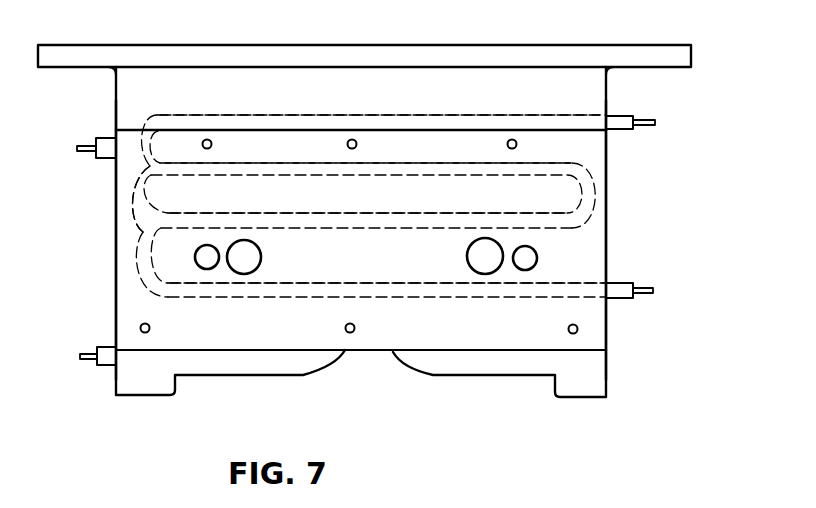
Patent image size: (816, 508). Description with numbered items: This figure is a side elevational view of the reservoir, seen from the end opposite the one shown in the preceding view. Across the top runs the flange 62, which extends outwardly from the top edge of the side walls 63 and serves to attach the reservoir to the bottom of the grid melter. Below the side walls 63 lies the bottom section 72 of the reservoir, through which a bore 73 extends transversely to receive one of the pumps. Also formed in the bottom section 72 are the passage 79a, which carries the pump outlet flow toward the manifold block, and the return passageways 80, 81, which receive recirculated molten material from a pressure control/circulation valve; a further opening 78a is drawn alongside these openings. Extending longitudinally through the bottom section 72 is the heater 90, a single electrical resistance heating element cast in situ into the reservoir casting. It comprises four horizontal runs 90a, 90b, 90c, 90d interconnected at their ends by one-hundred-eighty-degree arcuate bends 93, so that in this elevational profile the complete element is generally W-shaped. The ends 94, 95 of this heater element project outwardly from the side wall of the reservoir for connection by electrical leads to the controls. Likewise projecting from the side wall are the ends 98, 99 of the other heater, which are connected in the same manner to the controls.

The flange 62 is at (679, 57).
The side walls 63 is at (116, 230).
The bottom section 72 is at (117, 287).
The bore 73 is at (592, 29).
The aperture 78a is at (207, 269).
The passage 79a is at (538, 258).
The return passageway 80 is at (262, 253).
The return passageway 81 is at (467, 254).
The heater 90 is at (408, 113).
The horizontal run 90a is at (345, 113).
The horizontal run 90b is at (372, 177).
The horizontal run 90c is at (337, 212).
The horizontal run 90d is at (382, 282).
The arcuate end section 93 is at (148, 199).
The end of heater element 94 is at (634, 114).
The end of heater element 95 is at (634, 283).
The end of heater element 98 is at (77, 149).
The end of heater element 99 is at (88, 362).